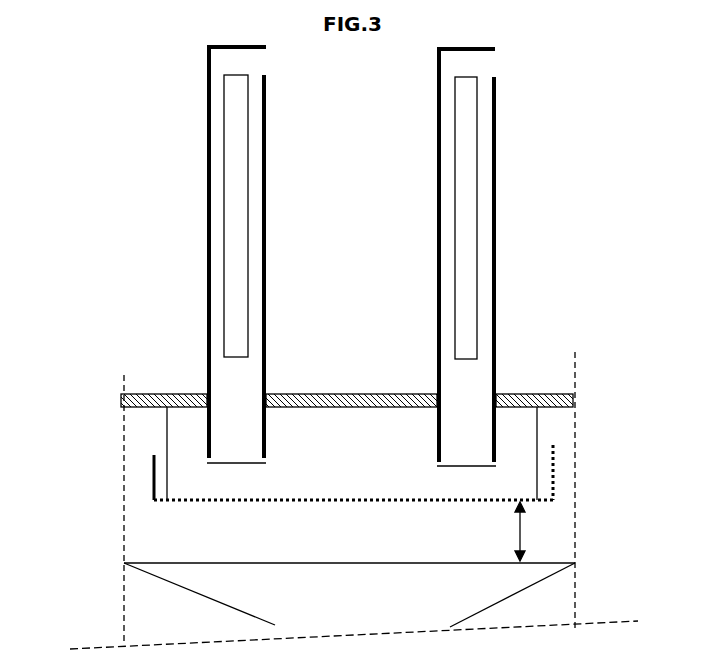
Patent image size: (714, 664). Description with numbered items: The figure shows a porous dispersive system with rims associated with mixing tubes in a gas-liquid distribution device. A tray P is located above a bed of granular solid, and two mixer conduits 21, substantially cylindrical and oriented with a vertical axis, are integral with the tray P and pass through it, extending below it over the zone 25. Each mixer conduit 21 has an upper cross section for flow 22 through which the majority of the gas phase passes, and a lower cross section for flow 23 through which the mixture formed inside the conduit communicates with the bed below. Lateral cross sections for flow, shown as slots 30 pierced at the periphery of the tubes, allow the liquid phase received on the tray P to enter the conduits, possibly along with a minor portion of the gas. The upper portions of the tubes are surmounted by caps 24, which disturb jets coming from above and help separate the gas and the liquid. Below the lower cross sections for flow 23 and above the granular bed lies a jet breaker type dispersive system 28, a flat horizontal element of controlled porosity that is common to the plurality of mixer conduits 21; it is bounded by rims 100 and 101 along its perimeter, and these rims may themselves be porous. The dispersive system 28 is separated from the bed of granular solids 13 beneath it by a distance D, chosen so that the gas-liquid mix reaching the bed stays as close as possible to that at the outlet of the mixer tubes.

The substrate 13 is at (443, 588).
The mixer conduit 21 is at (197, 92).
The upper cross section for flow 22 is at (480, 62).
The lower cross section for flow 23 is at (460, 455).
The cap 24 is at (222, 46).
The zone 25 is at (207, 433).
The jet breaker type dispersive system 28 is at (220, 497).
The slot 30 is at (465, 160).
The rim 100 is at (152, 475).
The right boundary 101 is at (553, 465).
The tray P is at (540, 388).
The distance D is at (531, 531).